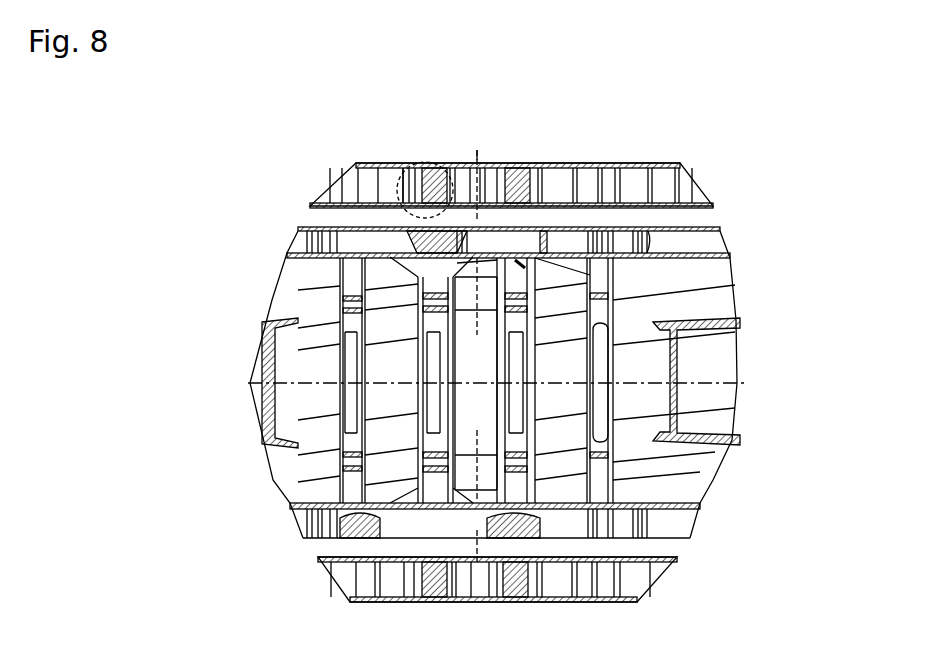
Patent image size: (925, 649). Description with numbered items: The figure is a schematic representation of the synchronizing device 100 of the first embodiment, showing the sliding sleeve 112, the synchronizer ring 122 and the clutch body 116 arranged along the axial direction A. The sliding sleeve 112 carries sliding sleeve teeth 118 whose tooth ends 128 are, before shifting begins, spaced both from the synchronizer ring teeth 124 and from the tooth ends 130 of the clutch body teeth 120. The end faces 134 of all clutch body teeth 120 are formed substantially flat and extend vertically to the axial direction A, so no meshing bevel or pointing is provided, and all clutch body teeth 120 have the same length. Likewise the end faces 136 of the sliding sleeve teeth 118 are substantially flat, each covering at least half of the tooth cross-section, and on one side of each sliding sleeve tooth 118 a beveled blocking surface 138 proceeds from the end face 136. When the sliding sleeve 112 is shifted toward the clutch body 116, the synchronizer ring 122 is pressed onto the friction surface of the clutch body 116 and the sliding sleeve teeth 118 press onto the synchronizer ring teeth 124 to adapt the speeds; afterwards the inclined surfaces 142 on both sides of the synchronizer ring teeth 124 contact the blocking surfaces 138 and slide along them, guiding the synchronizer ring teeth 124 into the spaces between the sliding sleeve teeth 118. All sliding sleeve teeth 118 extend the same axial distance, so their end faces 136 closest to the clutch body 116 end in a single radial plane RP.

The synchronizing device 100 is at (160, 229).
The sliding sleeve 112 is at (762, 356).
The clutch body 116 is at (717, 192).
The sliding sleeve teeth 118 is at (345, 266).
The clutch body teeth 120 is at (425, 178).
The synchronizer ring 122 is at (752, 245).
The synchronizer ring teeth 124 is at (385, 222).
The tooth ends 128 is at (348, 282).
The tooth ends 130 is at (545, 228).
The end faces 134 is at (403, 172).
The end faces 136 is at (520, 262).
The blocking surface 138 is at (400, 248).
The inclined surfaces 142 is at (482, 168).
The axial direction A is at (477, 144).
The radial plane RP is at (512, 262).